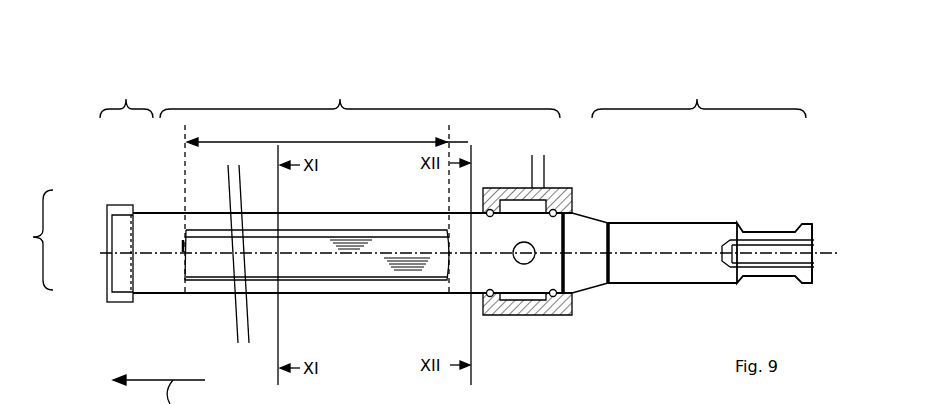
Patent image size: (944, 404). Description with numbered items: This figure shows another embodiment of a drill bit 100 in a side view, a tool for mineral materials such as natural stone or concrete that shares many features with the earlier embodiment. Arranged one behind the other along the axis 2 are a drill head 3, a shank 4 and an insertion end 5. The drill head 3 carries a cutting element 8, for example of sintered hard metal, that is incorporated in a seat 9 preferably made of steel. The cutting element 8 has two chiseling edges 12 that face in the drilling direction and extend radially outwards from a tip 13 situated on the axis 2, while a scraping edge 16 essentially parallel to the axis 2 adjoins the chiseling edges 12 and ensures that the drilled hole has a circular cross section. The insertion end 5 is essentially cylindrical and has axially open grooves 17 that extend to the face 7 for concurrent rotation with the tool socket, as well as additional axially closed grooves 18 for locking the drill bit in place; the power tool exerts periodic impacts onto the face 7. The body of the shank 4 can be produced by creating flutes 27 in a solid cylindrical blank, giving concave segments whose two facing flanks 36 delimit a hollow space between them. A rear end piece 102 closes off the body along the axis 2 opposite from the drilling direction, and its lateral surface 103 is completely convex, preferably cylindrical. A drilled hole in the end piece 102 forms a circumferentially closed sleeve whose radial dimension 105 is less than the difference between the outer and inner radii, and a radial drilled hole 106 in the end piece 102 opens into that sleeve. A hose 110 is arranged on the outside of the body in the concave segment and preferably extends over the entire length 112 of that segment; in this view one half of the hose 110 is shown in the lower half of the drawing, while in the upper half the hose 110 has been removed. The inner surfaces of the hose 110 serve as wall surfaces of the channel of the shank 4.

The drill bit 100 is at (166, 56).
The drill head 3 is at (126, 92).
The shank 4 is at (360, 94).
The insertion end 5 is at (699, 94).
The length 112 is at (238, 138).
The seat 9 is at (118, 240).
The radial drilled hole 106 is at (160, 243).
The cutting element 8 is at (32, 240).
The edge 12 is at (105, 236).
The tip 13 is at (105, 252).
The scraping edge 16 is at (107, 295).
The flank 36 is at (342, 232).
The flute 27 is at (383, 245).
The rear end piece 102 is at (487, 247).
The lateral surface 103 is at (485, 271).
The dimension 105 is at (524, 263).
The hose 110 is at (360, 267).
The axis 2 is at (668, 252).
The groove 17 is at (735, 232).
The groove 18 is at (772, 232).
The face 7 is at (815, 272).